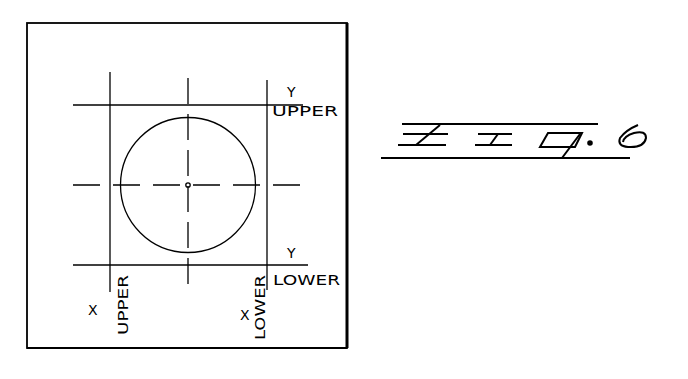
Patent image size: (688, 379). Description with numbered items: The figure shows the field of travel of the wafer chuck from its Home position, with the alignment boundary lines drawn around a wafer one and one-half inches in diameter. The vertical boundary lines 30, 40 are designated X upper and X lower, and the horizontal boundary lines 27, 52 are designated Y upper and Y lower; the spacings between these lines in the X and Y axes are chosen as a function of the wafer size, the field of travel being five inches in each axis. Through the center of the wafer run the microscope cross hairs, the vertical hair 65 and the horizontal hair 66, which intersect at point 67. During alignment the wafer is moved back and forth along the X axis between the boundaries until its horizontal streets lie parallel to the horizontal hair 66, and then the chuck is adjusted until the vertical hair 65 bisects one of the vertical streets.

The boundary line 30 is at (110, 86).
The boundary line 40 is at (267, 82).
The boundary line 27 is at (224, 103).
The boundary line 52 is at (232, 266).
The vertical hair 65 is at (188, 86).
The horizontal hair 66 is at (222, 180).
The intersection point 67 is at (189, 186).